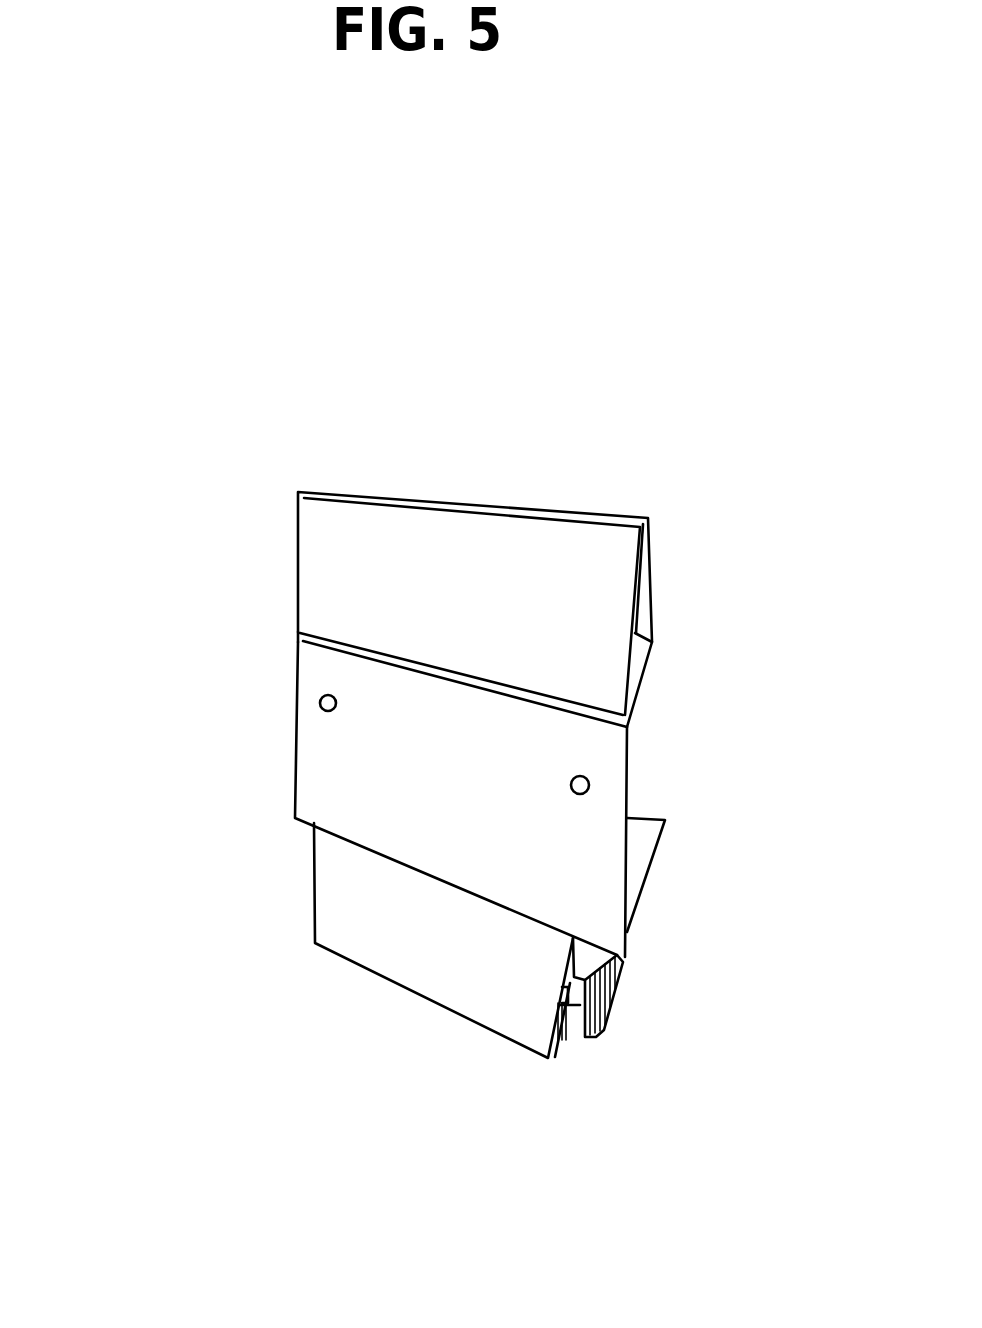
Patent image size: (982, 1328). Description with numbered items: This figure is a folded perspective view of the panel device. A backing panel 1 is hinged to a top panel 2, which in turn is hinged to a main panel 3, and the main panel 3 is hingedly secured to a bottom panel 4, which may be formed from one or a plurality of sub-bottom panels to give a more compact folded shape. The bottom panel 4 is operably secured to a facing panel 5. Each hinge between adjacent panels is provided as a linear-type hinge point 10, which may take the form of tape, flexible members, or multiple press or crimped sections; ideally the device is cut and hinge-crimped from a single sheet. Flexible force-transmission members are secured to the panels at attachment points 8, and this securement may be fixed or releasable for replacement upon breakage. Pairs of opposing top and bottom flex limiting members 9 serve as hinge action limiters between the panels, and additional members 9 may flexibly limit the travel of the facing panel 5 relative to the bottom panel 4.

The backing panel 1 is at (348, 767).
The top panel 2 is at (365, 545).
The main panel 3 is at (355, 900).
The bottom panel 4 is at (570, 1052).
The facing panel 5 is at (672, 838).
The attachment points 8 is at (550, 783).
The flex limiting members 9 is at (661, 585).
The hinge point 10 is at (290, 497).